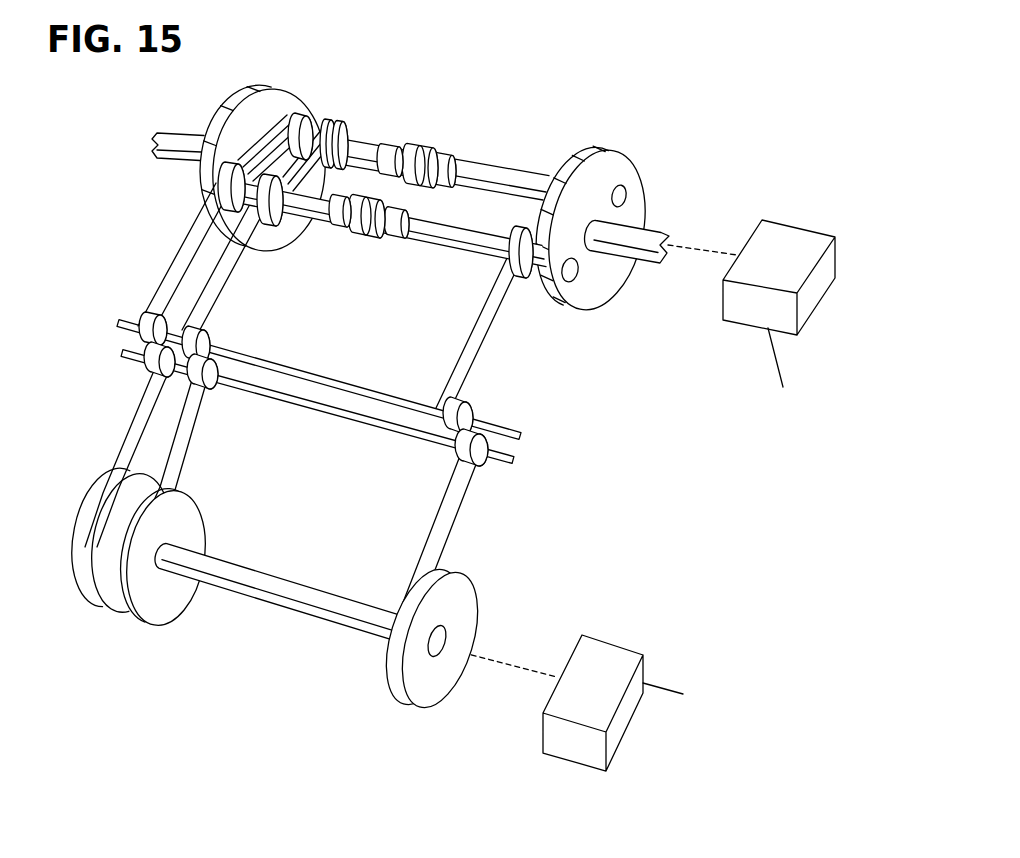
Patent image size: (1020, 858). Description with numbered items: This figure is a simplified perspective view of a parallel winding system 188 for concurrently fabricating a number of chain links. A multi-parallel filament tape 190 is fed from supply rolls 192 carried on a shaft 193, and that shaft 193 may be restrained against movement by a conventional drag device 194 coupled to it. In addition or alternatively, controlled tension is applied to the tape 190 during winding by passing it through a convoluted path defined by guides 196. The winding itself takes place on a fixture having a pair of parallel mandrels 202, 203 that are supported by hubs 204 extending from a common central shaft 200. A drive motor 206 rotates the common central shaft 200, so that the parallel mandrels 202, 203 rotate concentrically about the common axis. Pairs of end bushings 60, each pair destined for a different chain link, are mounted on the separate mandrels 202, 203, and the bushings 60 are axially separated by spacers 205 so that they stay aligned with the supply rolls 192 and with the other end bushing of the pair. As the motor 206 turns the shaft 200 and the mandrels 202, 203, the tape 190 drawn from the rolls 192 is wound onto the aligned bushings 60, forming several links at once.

The end bushings 60 is at (414, 140).
The drive assembly 188 is at (446, 191).
The multi-parallel filament tape 190 is at (163, 277).
The supply rolls 192 is at (162, 627).
The shaft 193 is at (278, 572).
The drag device 194 is at (603, 640).
The guides 196 is at (472, 407).
The common central shaft 200 is at (644, 270).
The mandrel 202 is at (467, 257).
The mandrel 203 is at (502, 167).
The hubs 204 is at (290, 93).
The spacers 205 is at (392, 242).
The drive motor 206 is at (798, 226).